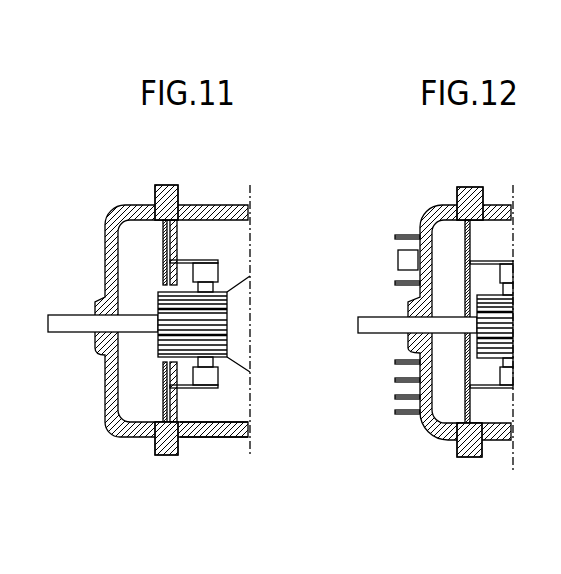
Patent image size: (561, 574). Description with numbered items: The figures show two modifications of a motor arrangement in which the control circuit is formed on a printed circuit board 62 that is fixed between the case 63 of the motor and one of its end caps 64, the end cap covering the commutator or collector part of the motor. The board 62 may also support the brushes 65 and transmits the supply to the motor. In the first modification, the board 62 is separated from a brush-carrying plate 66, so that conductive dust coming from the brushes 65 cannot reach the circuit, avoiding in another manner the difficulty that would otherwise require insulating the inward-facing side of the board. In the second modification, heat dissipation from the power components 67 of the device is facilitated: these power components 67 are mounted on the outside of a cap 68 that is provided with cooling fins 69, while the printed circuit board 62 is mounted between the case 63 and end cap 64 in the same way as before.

In FIG. 11, the printed circuit board 62 is at (168, 411).
In FIG. 12, the printed circuit board 62 is at (470, 253).
In FIG. 11, the case 63 is at (205, 437).
In FIG. 11, the end cap 64 is at (105, 416).
In FIG. 11, the brushes 65 is at (204, 272).
In FIG. 12, the brushes 65 is at (505, 275).
In FIG. 11, the brush-carrying plate 66 is at (178, 412).
In FIG. 12, the power components 67 is at (398, 260).
In FIG. 12, the cap 68 is at (445, 432).
In FIG. 12, the cooling fins 69 is at (395, 412).